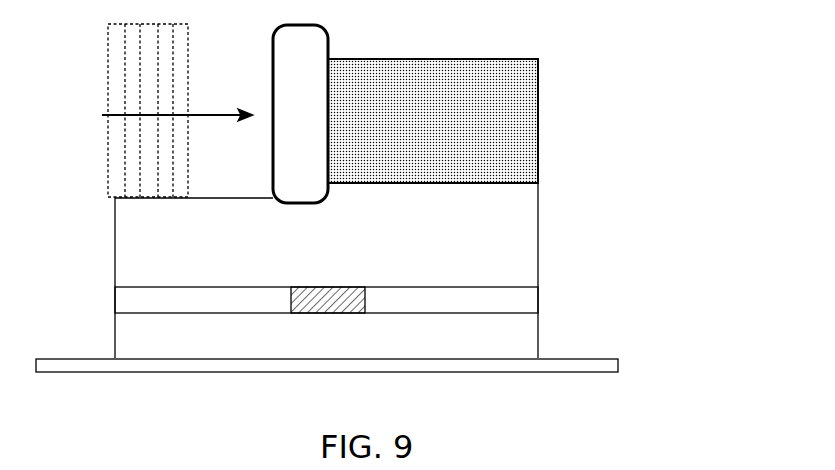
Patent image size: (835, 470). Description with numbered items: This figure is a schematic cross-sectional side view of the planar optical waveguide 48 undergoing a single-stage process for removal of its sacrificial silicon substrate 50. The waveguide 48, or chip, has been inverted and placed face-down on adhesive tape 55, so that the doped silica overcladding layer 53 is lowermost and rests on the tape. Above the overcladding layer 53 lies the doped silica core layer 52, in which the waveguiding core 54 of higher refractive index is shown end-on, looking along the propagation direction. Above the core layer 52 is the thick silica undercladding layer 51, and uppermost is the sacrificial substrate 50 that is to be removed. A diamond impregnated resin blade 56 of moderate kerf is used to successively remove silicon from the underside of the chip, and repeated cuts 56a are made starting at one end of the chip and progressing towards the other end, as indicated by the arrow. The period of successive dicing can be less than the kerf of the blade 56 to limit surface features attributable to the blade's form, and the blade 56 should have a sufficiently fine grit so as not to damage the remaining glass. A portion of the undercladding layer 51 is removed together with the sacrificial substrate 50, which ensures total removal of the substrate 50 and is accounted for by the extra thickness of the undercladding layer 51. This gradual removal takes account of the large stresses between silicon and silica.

The waveguide 48 is at (642, 70).
The sacrificial silicon substrate 50 is at (523, 130).
The undercladding layer 51 is at (523, 240).
The core layer 52 is at (523, 303).
The overcladding layer 53 is at (130, 342).
The waveguiding core 54 is at (322, 332).
The adhesive tape 55 is at (595, 358).
The diamond impregnated resin blade 56 is at (327, 42).
The repeated cuts 56a is at (108, 135).